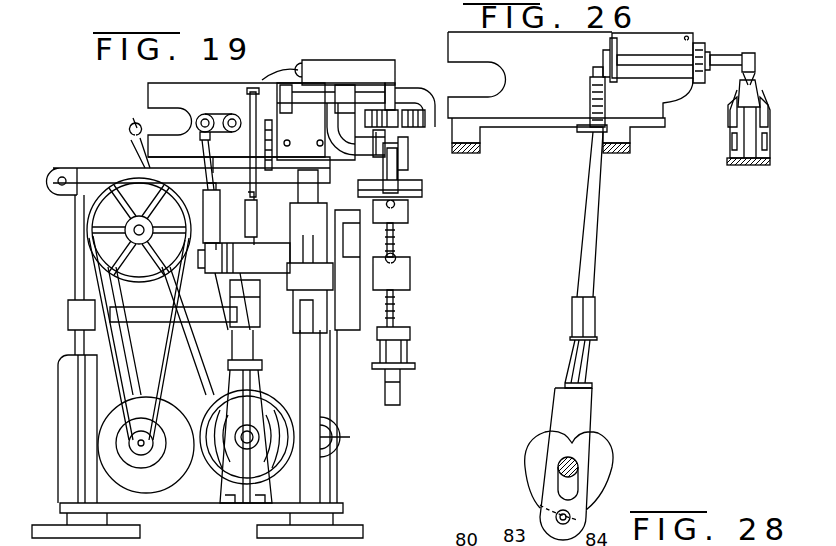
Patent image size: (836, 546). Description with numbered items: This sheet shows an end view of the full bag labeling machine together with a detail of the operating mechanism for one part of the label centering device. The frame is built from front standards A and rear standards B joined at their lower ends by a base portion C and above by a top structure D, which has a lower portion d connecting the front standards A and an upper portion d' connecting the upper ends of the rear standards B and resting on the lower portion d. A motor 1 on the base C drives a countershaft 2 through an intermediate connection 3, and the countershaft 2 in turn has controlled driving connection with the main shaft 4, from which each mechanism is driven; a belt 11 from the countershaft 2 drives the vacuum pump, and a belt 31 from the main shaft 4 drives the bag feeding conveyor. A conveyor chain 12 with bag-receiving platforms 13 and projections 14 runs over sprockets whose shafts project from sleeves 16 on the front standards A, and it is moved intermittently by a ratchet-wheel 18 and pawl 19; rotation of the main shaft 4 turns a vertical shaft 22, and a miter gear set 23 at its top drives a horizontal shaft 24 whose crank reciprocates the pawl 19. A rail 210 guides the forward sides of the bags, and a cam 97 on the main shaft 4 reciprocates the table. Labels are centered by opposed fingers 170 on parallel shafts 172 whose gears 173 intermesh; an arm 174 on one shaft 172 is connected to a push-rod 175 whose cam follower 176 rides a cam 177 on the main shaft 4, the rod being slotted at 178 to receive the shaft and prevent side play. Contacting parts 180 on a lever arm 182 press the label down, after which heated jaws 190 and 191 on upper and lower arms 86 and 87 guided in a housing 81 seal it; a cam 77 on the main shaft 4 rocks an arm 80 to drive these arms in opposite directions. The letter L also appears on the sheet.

In FIG. 19, the motor 1 is at (153, 483).
In FIG. 19, the countershaft 2 is at (139, 233).
In FIG. 19, the intermediate connection 3 is at (90, 263).
In FIG. 19, the main shaft 4 is at (249, 433).
In FIG. 26, the main shaft 4 is at (578, 462).
In FIG. 19, the belt 11 is at (140, 366).
In FIG. 19, the conveyor chain 12 is at (397, 308).
In FIG. 19, the bag-receiving platforms 13 is at (400, 278).
In FIG. 26, the bag-receiving platforms 13 is at (746, 165).
In FIG. 19, the projections 14 is at (397, 253).
In FIG. 19, the sleeves 16 is at (313, 203).
In FIG. 19, the ratchet-wheel 18 is at (353, 253).
In FIG. 19, the pawl 19 is at (347, 227).
In FIG. 19, the vertical shaft 22 is at (262, 349).
In FIG. 19, the miter gear set 23 is at (227, 280).
In FIG. 19, the horizontal shaft 24 is at (240, 230).
In FIG. 19, the belt 31 is at (337, 425).
In FIG. 19, the cam 77 is at (277, 460).
In FIG. 19, the arm 80 is at (216, 113).
In FIG. 19, the housing 81 is at (148, 92).
In FIG. 26, the housing 81 is at (465, 45).
In FIG. 19, the upper arm 86 is at (407, 97).
In FIG. 19, the lower arm 87 is at (332, 138).
In FIG. 19, the cam 97 is at (280, 480).
In FIG. 19, the fingers 170 is at (382, 83).
In FIG. 26, the fingers 170 is at (765, 45).
In FIG. 26, the parallel shafts 172 is at (650, 65).
In FIG. 26, the gear 173 is at (702, 85).
In FIG. 26, the arm 174 is at (605, 62).
In FIG. 26, the push-rod 175 is at (585, 242).
In FIG. 26, the cam follower 176 is at (577, 520).
In FIG. 26, the cam 177 is at (598, 447).
In FIG. 26, the slot 178 is at (557, 483).
In FIG. 19, the contacting parts 180 is at (427, 103).
In FIG. 19, the lever arm 182 is at (320, 88).
In FIG. 19, the jaw 190 is at (407, 120).
In FIG. 19, the jaw 191 is at (377, 135).
In FIG. 19, the rail 210 is at (408, 165).
In FIG. 26, the rail 210 is at (732, 150).
In FIG. 19, the front standards A is at (310, 403).
In FIG. 19, the rear standards B is at (85, 397).
In FIG. 19, the base portion C is at (182, 508).
In FIG. 19, the top structure D is at (282, 226).
In FIG. 26, the lever L is at (757, 72).
In FIG. 19, the lower portion d is at (336, 348).
In FIG. 19, the upper portion d' is at (95, 148).